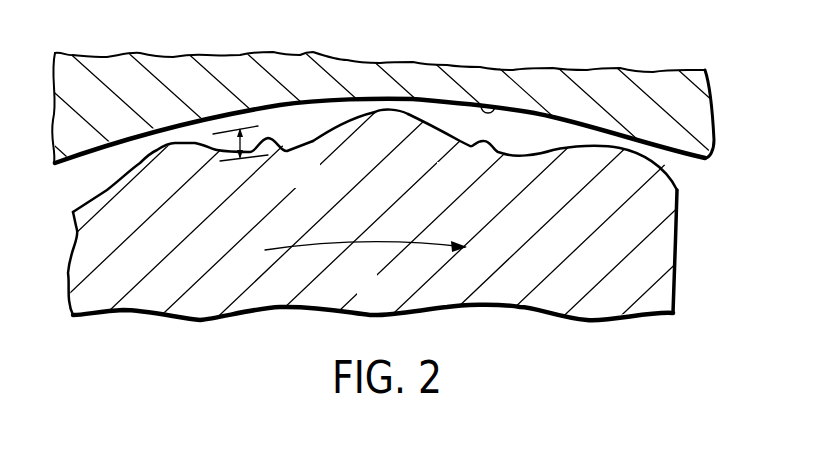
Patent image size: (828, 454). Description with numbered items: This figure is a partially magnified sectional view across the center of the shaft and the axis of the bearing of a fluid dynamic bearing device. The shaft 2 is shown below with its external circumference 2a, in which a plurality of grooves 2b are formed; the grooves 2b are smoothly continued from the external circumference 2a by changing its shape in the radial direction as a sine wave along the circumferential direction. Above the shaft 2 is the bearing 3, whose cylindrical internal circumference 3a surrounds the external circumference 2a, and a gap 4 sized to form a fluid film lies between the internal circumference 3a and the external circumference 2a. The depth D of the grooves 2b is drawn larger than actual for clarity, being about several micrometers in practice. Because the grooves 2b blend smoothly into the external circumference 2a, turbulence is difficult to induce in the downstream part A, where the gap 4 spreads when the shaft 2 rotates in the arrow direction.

The shaft 2 is at (414, 173).
The external circumference 2a is at (396, 103).
The grooves 2b is at (368, 117).
The bearing 3 is at (414, 95).
The internal circumference 3a is at (483, 104).
The gap 4 is at (183, 128).
The part A is at (342, 110).
The depth of the grooves D is at (232, 132).